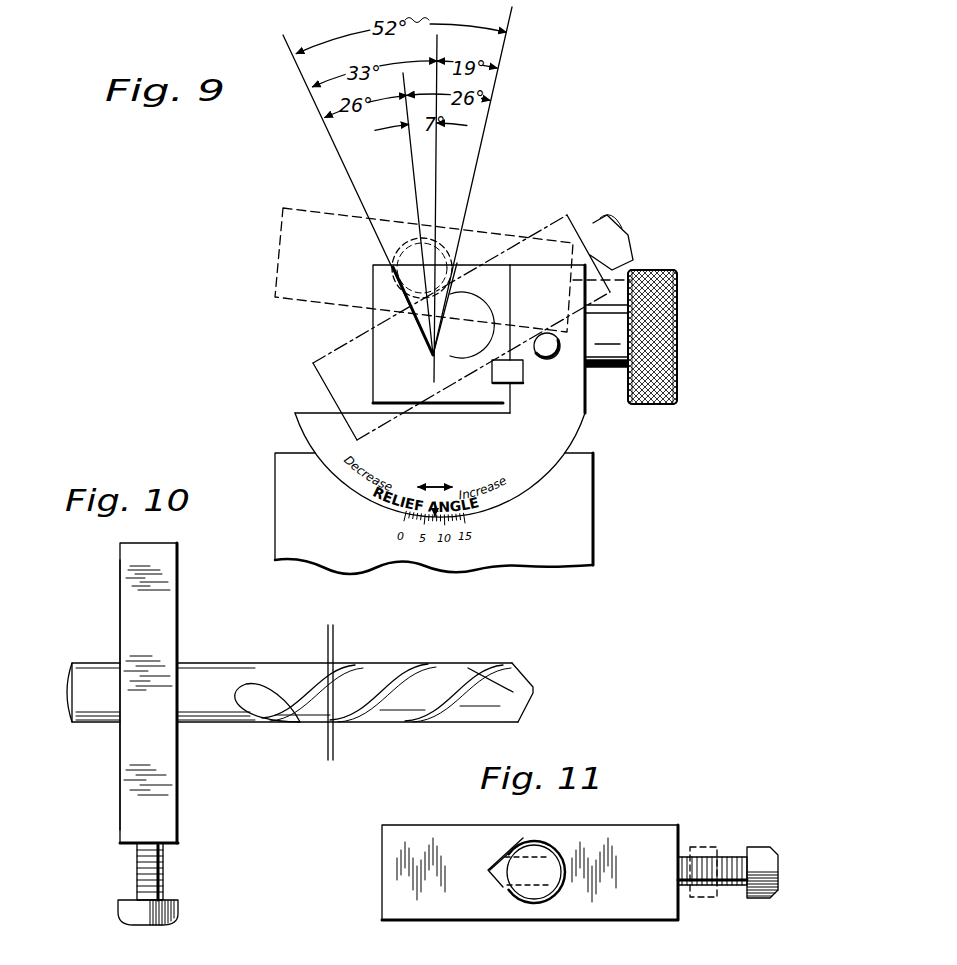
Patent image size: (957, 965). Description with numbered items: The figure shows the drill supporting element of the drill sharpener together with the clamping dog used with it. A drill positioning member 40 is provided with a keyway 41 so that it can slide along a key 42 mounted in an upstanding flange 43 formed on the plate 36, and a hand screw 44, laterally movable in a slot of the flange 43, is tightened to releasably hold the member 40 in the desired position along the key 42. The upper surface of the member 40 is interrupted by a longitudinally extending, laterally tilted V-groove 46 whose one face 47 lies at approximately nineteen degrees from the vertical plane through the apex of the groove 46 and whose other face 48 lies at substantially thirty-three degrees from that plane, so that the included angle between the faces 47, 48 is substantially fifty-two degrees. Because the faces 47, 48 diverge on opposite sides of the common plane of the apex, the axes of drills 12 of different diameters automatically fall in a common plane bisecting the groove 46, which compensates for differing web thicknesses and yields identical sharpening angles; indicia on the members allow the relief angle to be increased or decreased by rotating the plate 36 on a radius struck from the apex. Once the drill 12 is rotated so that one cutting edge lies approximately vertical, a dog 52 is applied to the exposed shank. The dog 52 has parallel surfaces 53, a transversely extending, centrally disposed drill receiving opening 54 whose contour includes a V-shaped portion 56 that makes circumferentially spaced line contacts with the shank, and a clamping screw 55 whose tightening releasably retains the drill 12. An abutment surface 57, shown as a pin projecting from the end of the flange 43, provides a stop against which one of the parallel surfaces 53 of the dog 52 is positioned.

In FIG. 10, the drill 12 is at (227, 680).
In FIG. 11, the drill 12 is at (523, 867).
In FIG. 9, the plate 36 is at (577, 508).
In FIG. 9, the drill positioning member 40 is at (393, 368).
In FIG. 9, the keyway 41 is at (512, 372).
In FIG. 9, the key 42 is at (511, 396).
In FIG. 9, the upstanding flange 43 is at (543, 282).
In FIG. 9, the hand screw 44 is at (662, 370).
In FIG. 9, the V-groove 46 is at (425, 340).
In FIG. 9, the face 47 is at (452, 282).
In FIG. 9, the face 48 is at (402, 282).
In FIG. 10, the dog 52 is at (117, 762).
In FIG. 11, the dog 52 is at (464, 840).
In FIG. 10, the parallel surfaces 53 is at (165, 748).
In FIG. 11, the parallel surfaces 53 is at (412, 827).
In FIG. 11, the drill receiving opening 54 is at (540, 853).
In FIG. 10, the clamping screw 55 is at (193, 868).
In FIG. 11, the clamping screw 55 is at (728, 857).
In FIG. 11, the V-shaped portion 56 is at (512, 877).
In FIG. 9, the abutment surface 57 is at (540, 333).